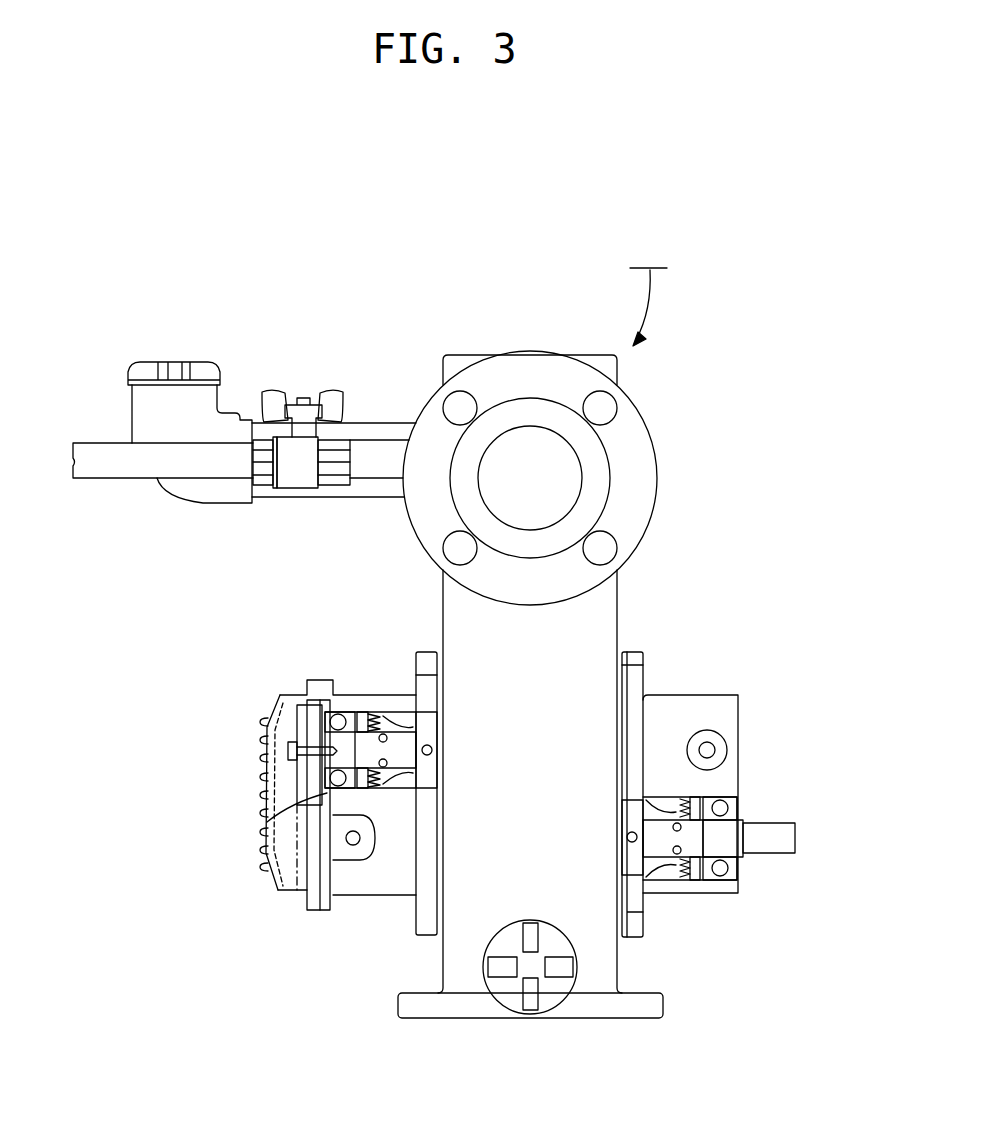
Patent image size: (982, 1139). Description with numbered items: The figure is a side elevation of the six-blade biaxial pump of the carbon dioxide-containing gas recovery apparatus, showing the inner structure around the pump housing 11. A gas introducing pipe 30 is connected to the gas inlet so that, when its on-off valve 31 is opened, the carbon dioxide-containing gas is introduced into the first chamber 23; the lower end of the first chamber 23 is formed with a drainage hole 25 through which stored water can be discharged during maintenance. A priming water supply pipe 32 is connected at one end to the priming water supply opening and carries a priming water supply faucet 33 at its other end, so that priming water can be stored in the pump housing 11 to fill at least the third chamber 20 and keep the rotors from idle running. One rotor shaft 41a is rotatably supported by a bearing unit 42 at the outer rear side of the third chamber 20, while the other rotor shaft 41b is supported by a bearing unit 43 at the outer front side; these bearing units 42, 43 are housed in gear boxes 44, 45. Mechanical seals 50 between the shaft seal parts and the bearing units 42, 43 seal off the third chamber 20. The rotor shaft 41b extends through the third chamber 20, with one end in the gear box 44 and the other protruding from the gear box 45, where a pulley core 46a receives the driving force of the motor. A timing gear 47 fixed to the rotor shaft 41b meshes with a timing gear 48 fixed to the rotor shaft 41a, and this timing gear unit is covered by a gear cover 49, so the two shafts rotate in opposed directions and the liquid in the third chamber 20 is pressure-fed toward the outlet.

The pump housing 11 is at (649, 293).
The third chamber 20 is at (625, 668).
The first chamber 23 is at (575, 462).
The drainage hole 25 is at (550, 996).
The gas introducing pipe 30 is at (120, 465).
The on-off valve 31 is at (305, 462).
The priming water supply pipe 32 is at (372, 433).
The priming water supply faucet 33 is at (185, 371).
The rotor shaft 41a is at (693, 840).
The rotor shaft 41b is at (365, 745).
The bearing unit 42 is at (327, 722).
The bearing unit 43 is at (738, 882).
The gear box 44 is at (382, 873).
The gear box 45 is at (710, 717).
The pulley core 46a is at (775, 837).
The timing gear 47 is at (300, 853).
The timing gear 48 is at (310, 730).
The gear cover 49 is at (280, 880).
The mechanical seal 50 is at (427, 732).